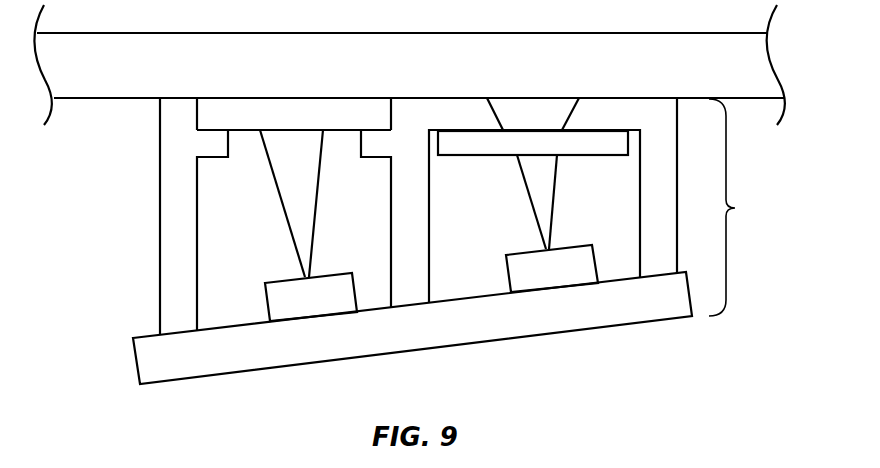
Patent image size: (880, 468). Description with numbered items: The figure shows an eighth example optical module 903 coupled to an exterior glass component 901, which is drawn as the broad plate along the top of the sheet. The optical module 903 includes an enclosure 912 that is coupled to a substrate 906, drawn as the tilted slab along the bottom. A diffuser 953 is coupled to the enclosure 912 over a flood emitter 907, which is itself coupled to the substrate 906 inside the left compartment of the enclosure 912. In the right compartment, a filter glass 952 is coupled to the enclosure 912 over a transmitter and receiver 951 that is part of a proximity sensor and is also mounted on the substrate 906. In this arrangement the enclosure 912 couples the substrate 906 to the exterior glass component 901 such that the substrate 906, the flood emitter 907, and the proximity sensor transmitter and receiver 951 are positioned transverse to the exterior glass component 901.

The exterior glass component 901 is at (776, 52).
The optical module 903 is at (743, 207).
The substrate 906 is at (555, 333).
The flood emitter 907 is at (265, 283).
The enclosure 912 is at (133, 225).
The transmitter and receiver 951 is at (501, 254).
The filter glass 952 is at (589, 156).
The diffuser 953 is at (343, 131).